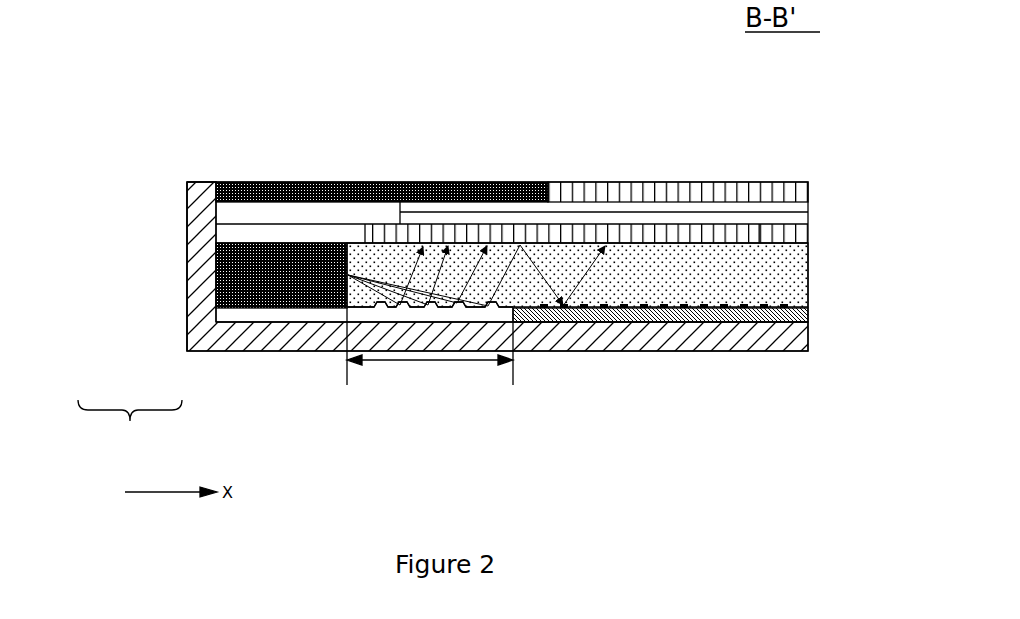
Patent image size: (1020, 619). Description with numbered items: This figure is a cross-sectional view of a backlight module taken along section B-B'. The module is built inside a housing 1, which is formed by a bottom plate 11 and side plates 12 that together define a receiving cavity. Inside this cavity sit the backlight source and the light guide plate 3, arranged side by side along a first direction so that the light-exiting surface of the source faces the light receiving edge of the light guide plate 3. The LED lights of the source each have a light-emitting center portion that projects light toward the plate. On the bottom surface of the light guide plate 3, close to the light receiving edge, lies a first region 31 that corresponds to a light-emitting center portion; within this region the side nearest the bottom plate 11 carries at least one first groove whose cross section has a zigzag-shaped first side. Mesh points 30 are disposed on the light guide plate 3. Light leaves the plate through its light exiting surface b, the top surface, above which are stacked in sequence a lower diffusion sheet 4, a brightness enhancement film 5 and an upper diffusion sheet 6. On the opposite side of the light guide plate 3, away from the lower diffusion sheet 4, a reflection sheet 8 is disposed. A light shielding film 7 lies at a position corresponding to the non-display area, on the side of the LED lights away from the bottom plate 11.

The housing 1 is at (130, 433).
The bottom plate 11 is at (258, 328).
The side plates 12 is at (197, 303).
The light guide plate 3 is at (716, 283).
The mesh points 30 is at (788, 307).
The first region 31 is at (430, 346).
The lower diffusion sheet 4 is at (455, 242).
The brightness enhancement film 5 is at (514, 216).
The upper diffusion sheet 6 is at (598, 188).
The light shielding film 7 is at (384, 188).
The reflection sheet 8 is at (617, 317).
The light exiting surface b is at (757, 242).